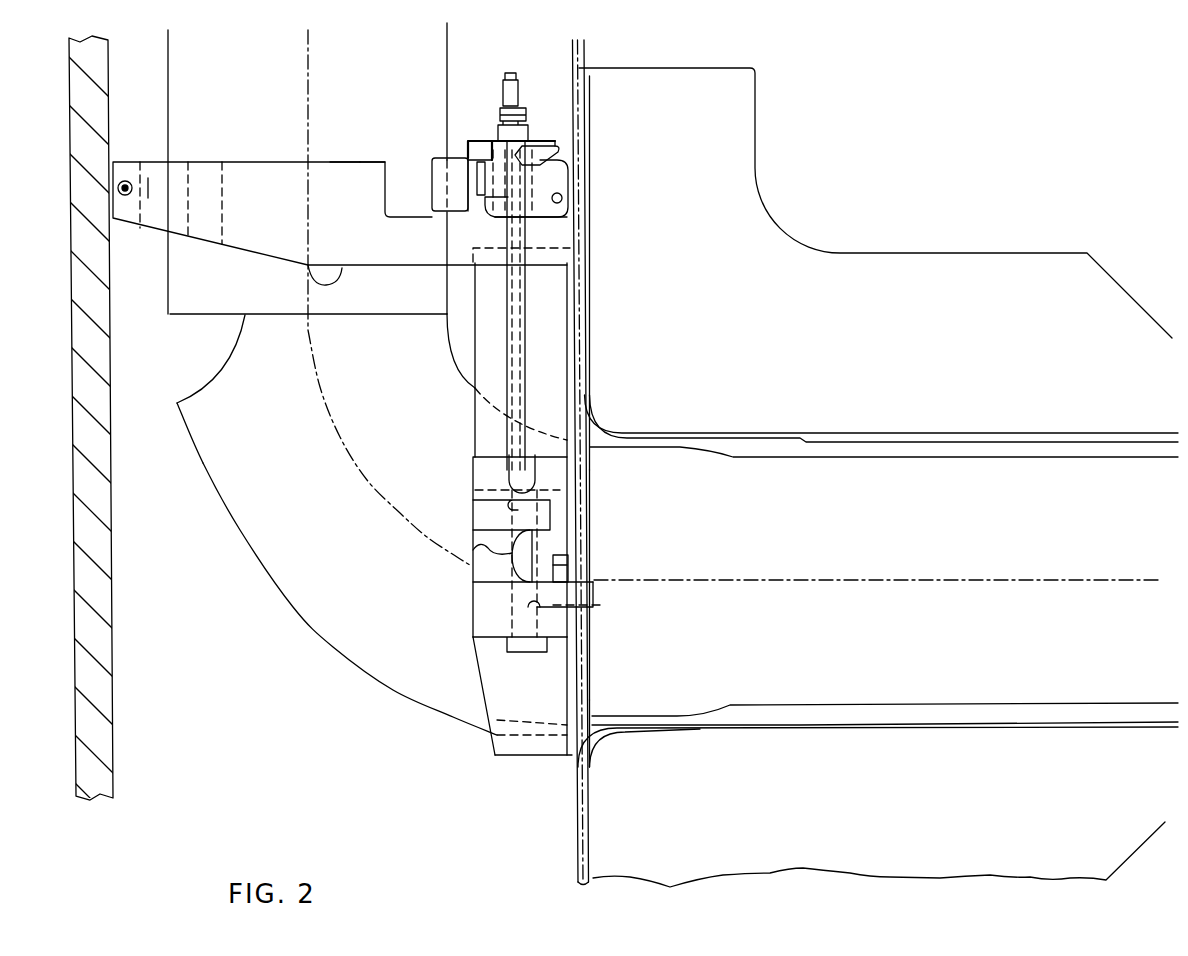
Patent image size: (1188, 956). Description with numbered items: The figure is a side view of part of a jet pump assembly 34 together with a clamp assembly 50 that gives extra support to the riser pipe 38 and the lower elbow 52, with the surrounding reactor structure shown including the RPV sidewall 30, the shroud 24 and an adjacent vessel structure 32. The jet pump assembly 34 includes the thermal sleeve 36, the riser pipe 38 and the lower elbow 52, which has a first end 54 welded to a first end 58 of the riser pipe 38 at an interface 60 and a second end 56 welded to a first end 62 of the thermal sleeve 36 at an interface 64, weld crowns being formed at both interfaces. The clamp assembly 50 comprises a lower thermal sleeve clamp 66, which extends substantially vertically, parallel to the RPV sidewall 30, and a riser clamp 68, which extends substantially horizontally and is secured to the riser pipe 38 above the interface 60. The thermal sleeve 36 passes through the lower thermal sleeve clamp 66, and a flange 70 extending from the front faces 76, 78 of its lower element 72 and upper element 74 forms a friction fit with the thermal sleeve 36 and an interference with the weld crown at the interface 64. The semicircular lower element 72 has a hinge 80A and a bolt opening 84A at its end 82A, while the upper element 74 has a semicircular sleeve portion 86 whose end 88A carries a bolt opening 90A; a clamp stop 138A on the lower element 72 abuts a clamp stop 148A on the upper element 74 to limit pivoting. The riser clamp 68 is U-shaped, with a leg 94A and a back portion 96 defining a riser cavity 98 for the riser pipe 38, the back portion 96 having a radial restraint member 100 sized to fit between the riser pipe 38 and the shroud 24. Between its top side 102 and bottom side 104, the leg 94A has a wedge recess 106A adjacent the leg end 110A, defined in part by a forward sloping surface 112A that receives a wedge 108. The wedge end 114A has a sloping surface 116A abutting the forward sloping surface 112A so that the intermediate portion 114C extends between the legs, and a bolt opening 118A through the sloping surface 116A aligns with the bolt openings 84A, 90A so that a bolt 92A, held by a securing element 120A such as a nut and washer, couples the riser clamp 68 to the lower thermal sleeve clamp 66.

The shroud 24 is at (113, 780).
The RPV sidewall 30 is at (580, 880).
The upper panel 32 is at (820, 275).
The jet pump assembly 34 is at (158, 42).
The thermal sleeve 36 is at (835, 708).
The riser pipe 38 is at (170, 76).
The clamp assembly 50 is at (551, 56).
The lower elbow 52 is at (330, 644).
The first end 54 is at (190, 341).
The second end 56 is at (478, 704).
The first end 58 is at (192, 295).
The interface 60 is at (180, 404).
The first end 62 is at (647, 704).
The interface 64 is at (560, 543).
The lower thermal sleeve clamp 66 is at (535, 748).
The riser clamp 68 is at (265, 175).
The flange 70 is at (591, 663).
The lower element 72 is at (496, 671).
The upper element 74 is at (471, 479).
The front face 76 is at (591, 697).
The front face 78 is at (587, 497).
The hinge 80A is at (471, 576).
The lower element end 82A is at (475, 595).
The bolt opening 84A is at (598, 605).
The sleeve portion 86 is at (492, 438).
The end 88A is at (496, 522).
The bolt opening 90A is at (509, 489).
The bolt 92A is at (572, 568).
The leg 94A is at (362, 178).
The back portion 96 is at (158, 208).
The riser cavity 98 is at (235, 154).
The radial restraint member 100 is at (150, 164).
The top side 102 is at (342, 160).
The bottom side 104 is at (323, 283).
The wedge recess 106A is at (390, 200).
The wedge 108 is at (458, 164).
The leg end 110A is at (557, 227).
The forward sloping surface 112A is at (460, 208).
The wedge end 114A is at (553, 220).
The intermediate portion 114C is at (522, 215).
The sloping surface 116A is at (450, 236).
The bolt opening 118A is at (497, 197).
The securing element 120A is at (517, 95).
The clamp stop 138A is at (570, 560).
The clamp stop 148A is at (560, 510).